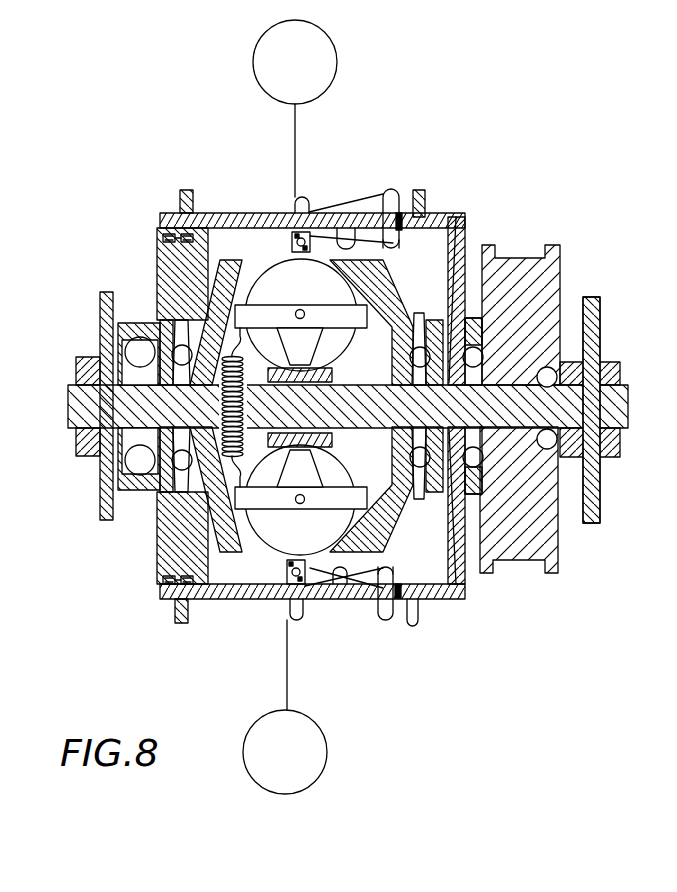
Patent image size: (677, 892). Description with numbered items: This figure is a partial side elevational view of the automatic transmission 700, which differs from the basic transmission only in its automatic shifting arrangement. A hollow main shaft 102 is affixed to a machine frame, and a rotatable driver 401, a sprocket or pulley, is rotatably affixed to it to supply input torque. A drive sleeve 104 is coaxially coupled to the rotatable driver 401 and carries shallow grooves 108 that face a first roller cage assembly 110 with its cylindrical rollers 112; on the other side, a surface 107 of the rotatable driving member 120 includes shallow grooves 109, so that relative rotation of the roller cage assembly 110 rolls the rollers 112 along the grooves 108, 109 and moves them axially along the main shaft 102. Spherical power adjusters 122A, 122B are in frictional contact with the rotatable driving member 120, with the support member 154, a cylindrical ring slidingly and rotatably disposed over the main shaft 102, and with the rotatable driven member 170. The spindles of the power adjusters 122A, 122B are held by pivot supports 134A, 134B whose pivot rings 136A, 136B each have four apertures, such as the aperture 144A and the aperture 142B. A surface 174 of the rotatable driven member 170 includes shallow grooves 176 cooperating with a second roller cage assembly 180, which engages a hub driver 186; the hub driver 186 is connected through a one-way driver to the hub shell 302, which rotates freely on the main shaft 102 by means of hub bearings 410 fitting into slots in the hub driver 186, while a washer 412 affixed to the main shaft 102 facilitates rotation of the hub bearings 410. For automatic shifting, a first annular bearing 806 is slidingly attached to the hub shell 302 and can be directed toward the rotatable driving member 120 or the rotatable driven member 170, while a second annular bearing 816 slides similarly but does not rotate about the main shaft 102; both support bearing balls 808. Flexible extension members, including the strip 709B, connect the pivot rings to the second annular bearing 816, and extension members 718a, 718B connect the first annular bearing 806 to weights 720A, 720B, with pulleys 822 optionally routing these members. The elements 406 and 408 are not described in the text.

The automatic transmission 700 is at (134, 110).
The main shaft 102 is at (70, 395).
The drive sleeve 104 is at (500, 560).
The surface 107 is at (456, 300).
The shallow grooves 108 is at (162, 597).
The shallow grooves 109 is at (474, 318).
The first roller cage assembly 110 is at (434, 572).
The cylindrical rollers 112 is at (485, 340).
The rotatable driving member 120 is at (412, 626).
The spherical power adjuster 122A is at (345, 275).
The spherical power adjuster 122B is at (290, 548).
The pivot support 134A is at (165, 300).
The pivot support 134B is at (255, 582).
The pivot ring 136A is at (232, 258).
The pivot ring 136B is at (386, 602).
The aperture 142B is at (343, 600).
The aperture 144A is at (362, 322).
The support member 154 is at (400, 548).
The rotatable driven member 170 is at (182, 230).
The surface 174 is at (183, 624).
The shallow grooves 176 is at (222, 455).
The second roller cage assembly 180 is at (166, 495).
The hub driver 186 is at (160, 290).
The hub shell 302 is at (170, 612).
The rotatable driver 401 is at (529, 257).
The plate 406 is at (596, 497).
The hub 408 is at (541, 559).
The hub bearings 410 is at (147, 480).
The washer 412 is at (107, 498).
The strip 709B is at (226, 560).
The extension member 718a is at (296, 124).
The extension member 718B is at (290, 704).
The weight 720A is at (323, 57).
The weight 720B is at (272, 785).
The first annular bearing 806 is at (292, 235).
The bearing balls 808 is at (290, 200).
The second annular bearing 816 is at (338, 232).
The pulleys 822 is at (305, 200).